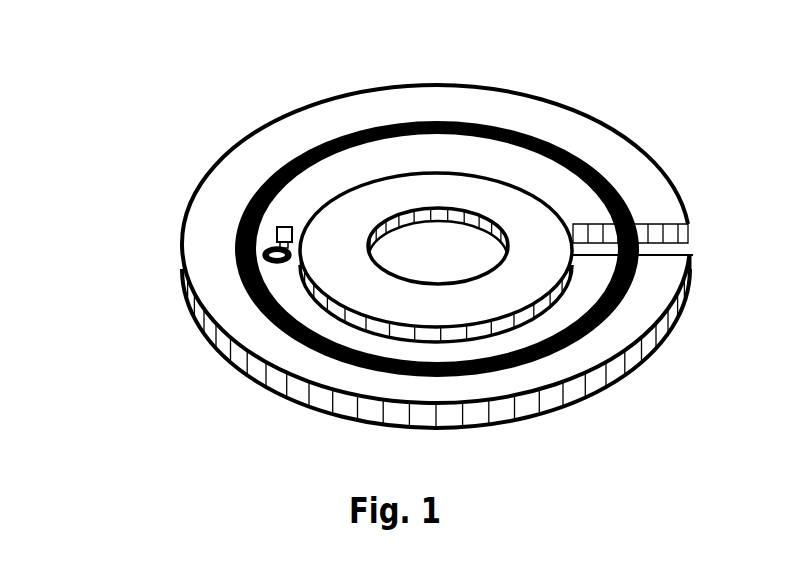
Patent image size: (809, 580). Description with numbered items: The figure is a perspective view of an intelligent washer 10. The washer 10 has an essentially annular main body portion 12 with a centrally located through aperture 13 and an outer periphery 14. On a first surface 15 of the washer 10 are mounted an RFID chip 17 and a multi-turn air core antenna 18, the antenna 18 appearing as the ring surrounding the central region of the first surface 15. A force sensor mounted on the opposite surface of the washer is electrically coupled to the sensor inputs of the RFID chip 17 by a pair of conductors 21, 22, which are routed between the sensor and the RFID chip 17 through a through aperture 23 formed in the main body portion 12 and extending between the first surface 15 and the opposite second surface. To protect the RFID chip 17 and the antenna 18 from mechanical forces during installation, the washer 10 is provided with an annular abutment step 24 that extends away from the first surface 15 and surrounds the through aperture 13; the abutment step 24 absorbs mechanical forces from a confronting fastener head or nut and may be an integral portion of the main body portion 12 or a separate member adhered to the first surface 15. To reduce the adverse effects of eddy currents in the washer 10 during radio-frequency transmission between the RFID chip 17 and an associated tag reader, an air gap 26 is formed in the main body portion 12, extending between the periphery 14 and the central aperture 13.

The washer 10 is at (428, 237).
The main body portion 12 is at (449, 233).
The through aperture 13 is at (418, 218).
The outer periphery 14 is at (605, 378).
The first surface 15 is at (242, 188).
The RFID chip 17 is at (200, 208).
The multi-turn air core antenna 18 is at (602, 170).
The conductor 21 is at (275, 244).
The conductor 22 is at (268, 252).
The through aperture 23 is at (266, 258).
The annular abutment step 24 is at (380, 298).
The air gap 26 is at (682, 252).